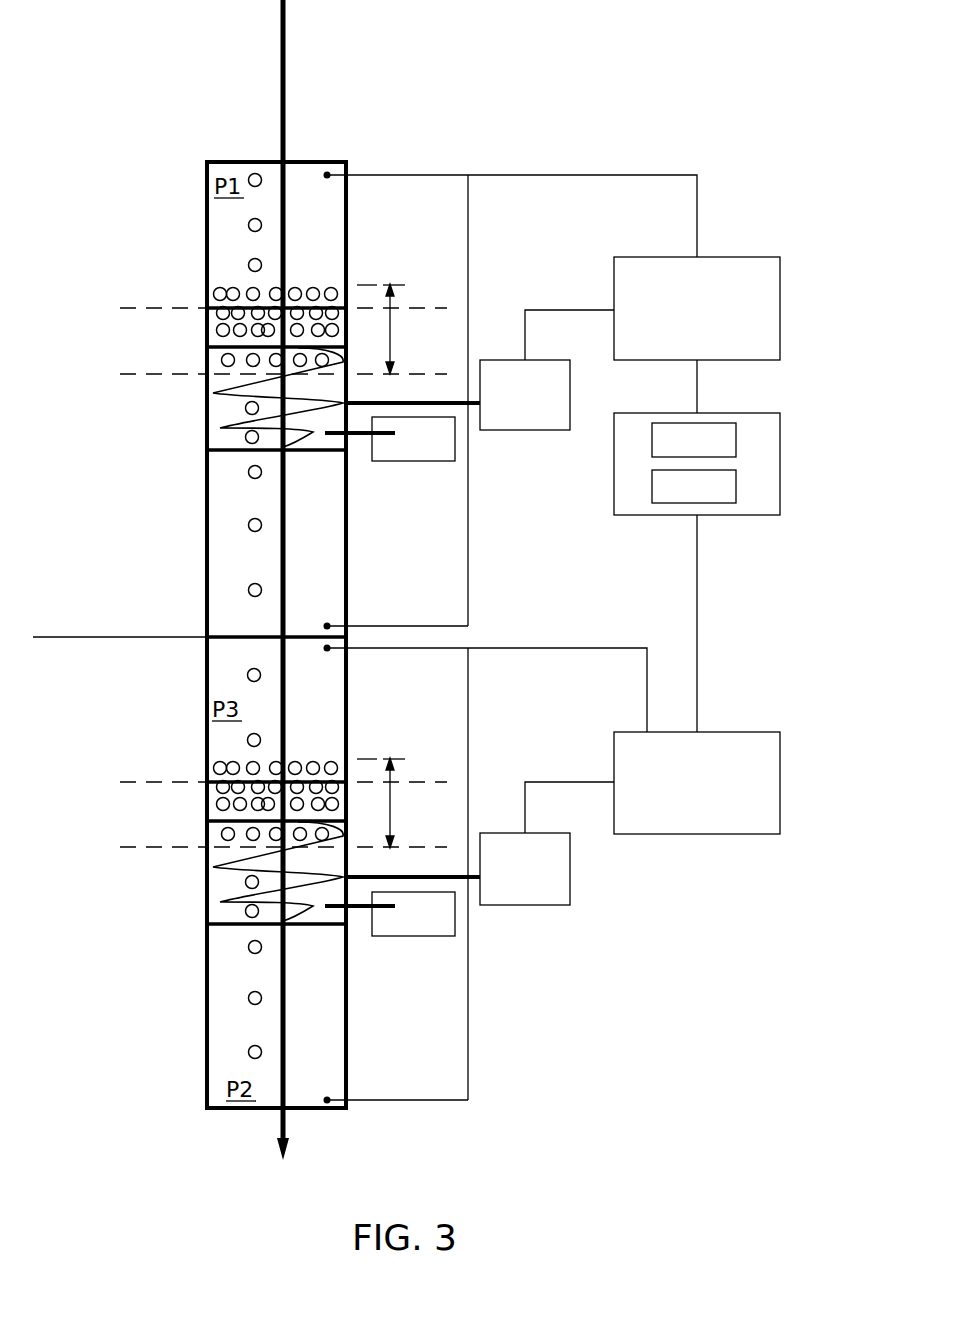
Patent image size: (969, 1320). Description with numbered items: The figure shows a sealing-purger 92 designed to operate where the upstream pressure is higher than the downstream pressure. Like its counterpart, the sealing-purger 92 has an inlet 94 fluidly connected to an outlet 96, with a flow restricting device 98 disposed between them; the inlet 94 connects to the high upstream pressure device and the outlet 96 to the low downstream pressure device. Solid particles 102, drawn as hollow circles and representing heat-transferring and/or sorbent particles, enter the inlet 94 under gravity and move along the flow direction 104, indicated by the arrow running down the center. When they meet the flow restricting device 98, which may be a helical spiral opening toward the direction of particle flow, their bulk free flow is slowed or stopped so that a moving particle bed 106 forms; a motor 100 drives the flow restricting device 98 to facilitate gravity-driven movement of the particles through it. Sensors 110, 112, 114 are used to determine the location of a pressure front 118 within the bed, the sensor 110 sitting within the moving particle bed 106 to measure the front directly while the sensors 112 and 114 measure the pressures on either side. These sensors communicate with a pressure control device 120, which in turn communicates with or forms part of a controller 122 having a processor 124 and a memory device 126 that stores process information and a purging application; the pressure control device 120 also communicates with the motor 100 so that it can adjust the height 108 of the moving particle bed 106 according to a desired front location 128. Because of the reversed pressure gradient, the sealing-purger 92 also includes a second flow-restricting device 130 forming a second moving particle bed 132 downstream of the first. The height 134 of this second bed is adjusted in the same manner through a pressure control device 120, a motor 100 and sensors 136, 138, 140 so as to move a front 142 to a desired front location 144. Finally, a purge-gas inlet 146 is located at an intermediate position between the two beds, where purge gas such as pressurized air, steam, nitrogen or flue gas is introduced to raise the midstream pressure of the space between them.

The sealing-purger 92 is at (82, 308).
The inlet 94 is at (236, 160).
The outlet 96 is at (241, 1110).
The flow restricting device 98 is at (212, 396).
The motor 100 is at (546, 408).
The solid particles 102 is at (214, 290).
The flow direction 104 is at (281, 36).
The moving particle bed 106 is at (304, 284).
The height of the moving particle bed 108 is at (394, 338).
The sensor 110 is at (446, 449).
The sensor 112 is at (328, 172).
The sensor 114 is at (326, 622).
The pressure front 118 is at (146, 372).
The pressure control device 120 is at (718, 321).
The controller 122 is at (752, 516).
The processor 124 is at (716, 453).
The memory device 126 is at (716, 498).
The desired front location 128 is at (146, 306).
The second flow-restricting device 130 is at (212, 870).
The second moving particle bed 132 is at (304, 756).
The height of the second moving particle bed 134 is at (394, 813).
The sensor 136 is at (446, 923).
The sensor 138 is at (330, 650).
The sensor 140 is at (326, 1096).
The front 142 is at (146, 845).
The desired front location 144 is at (146, 780).
The purge-gas inlet 146 is at (238, 632).